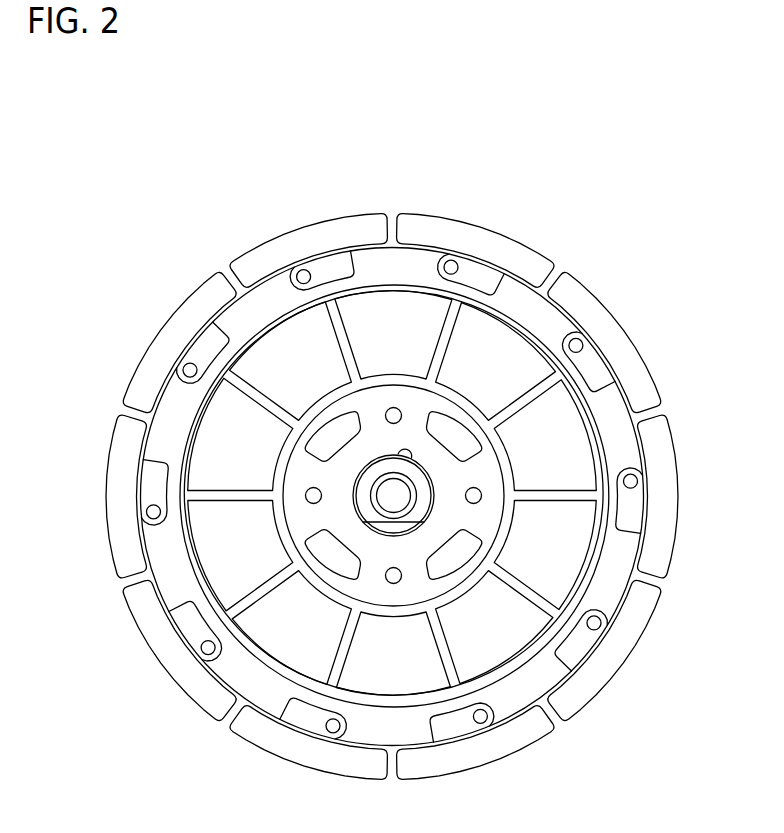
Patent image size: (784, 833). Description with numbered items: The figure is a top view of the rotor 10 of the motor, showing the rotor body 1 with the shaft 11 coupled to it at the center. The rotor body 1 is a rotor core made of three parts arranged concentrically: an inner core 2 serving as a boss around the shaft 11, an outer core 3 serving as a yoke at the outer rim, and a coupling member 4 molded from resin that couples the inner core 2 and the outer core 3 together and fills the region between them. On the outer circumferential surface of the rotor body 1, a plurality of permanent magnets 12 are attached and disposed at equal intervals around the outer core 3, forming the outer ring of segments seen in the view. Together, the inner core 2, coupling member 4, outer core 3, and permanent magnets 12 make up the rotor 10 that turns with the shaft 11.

The rotor 10 is at (565, 234).
The rotor body 1 is at (201, 347).
The permanent magnet 12 is at (606, 330).
The inner core 2 is at (486, 523).
The outer core 3 is at (593, 637).
The coupling member 4 is at (551, 562).
The shaft 11 is at (393, 491).